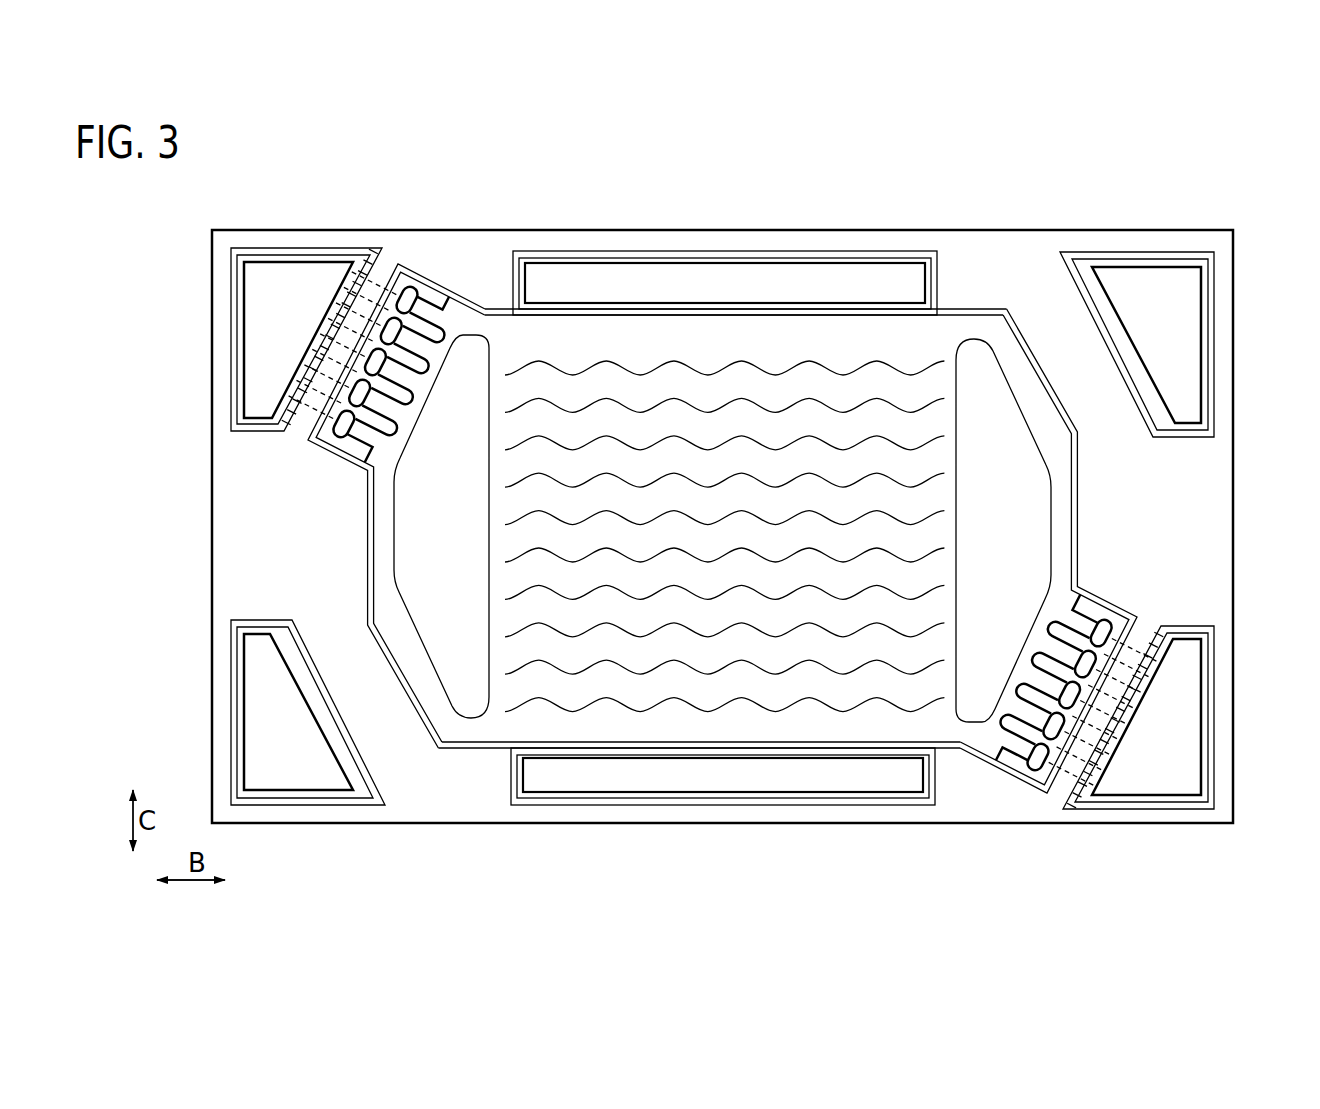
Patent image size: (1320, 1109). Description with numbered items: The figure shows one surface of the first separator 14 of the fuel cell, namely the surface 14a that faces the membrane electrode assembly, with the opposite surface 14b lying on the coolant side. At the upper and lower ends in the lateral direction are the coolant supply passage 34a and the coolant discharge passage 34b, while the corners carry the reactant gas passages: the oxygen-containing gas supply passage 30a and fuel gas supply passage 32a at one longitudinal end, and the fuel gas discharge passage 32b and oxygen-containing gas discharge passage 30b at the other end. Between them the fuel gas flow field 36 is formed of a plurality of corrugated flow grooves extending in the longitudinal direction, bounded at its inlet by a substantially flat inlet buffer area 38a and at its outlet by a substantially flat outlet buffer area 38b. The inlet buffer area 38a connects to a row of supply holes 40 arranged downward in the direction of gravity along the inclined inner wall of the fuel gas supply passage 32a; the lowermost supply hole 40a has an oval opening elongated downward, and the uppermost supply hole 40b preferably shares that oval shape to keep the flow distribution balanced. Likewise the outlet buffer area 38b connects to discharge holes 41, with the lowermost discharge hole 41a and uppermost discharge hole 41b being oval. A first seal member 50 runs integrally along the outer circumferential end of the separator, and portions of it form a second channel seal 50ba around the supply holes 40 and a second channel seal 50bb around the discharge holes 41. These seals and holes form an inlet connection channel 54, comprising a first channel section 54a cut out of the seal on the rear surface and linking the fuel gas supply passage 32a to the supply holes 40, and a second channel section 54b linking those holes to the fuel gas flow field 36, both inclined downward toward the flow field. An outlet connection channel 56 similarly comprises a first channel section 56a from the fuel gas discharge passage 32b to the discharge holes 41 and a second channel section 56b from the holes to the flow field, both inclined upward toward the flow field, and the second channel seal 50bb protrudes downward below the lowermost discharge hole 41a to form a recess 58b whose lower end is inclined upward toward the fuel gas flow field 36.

The first separator 14 is at (163, 207).
The surface 14a is at (1208, 512).
The surface 14b is at (1205, 466).
The oxygen-containing gas supply passage 30a is at (268, 730).
The oxygen-containing gas discharge passage 30b is at (1182, 330).
The fuel gas supply passage 32a is at (262, 336).
The fuel gas discharge passage 32b is at (1187, 723).
The coolant supply passage 34a is at (597, 280).
The coolant discharge passage 34b is at (847, 778).
The fuel gas flow field 36 is at (824, 402).
The inlet buffer area 38a is at (410, 540).
The outlet buffer area 38b is at (1035, 520).
The supply holes 40 is at (346, 349).
The supply hole at the lowermost position 40a is at (337, 434).
The supply hole at the uppermost position 40b is at (408, 293).
The discharge holes 41 is at (1121, 725).
The discharge hole at the lowermost position 41a is at (1038, 760).
The discharge hole at the uppermost position 41b is at (1106, 626).
The first seal member 50 is at (994, 236).
The second channel seal 50ba is at (447, 285).
The second channel seal 50bb is at (1043, 614).
The inlet connection channel 54 is at (298, 436).
The first channel section 54a is at (300, 358).
The second channel section 54b is at (368, 440).
The outlet connection channel 56 is at (1153, 612).
The first channel section 56a is at (1147, 700).
The second channel section 56b is at (1040, 632).
The recess 58b is at (1060, 797).